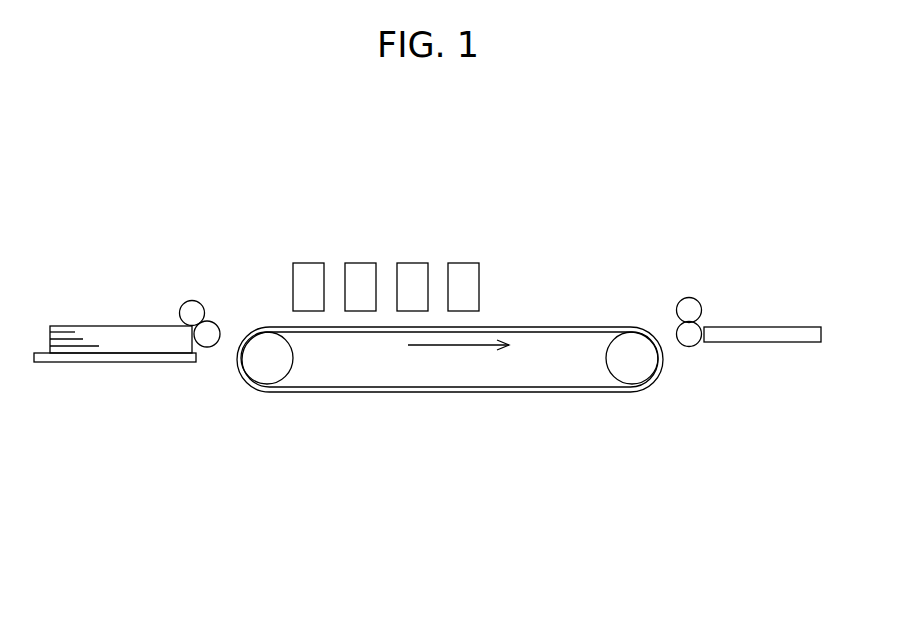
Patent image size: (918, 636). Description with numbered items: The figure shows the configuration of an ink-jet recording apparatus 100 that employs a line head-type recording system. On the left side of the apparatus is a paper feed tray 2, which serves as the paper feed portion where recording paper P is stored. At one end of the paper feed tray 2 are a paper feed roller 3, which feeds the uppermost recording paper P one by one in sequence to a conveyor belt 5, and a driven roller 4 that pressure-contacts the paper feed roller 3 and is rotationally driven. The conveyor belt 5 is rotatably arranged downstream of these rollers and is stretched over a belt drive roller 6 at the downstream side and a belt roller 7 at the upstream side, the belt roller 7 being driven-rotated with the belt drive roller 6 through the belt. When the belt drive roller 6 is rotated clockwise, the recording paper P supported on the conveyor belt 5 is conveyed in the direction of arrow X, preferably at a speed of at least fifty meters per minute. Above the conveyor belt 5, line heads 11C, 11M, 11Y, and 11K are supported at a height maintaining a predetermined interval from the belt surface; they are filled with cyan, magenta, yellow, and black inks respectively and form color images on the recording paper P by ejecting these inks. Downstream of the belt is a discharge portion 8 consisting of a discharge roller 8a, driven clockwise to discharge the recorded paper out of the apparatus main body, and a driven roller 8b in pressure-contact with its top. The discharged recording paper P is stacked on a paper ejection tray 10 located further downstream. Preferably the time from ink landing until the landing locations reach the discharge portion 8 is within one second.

The ink-jet recording apparatus 100 is at (242, 268).
The paper feed tray 2 is at (99, 362).
The recording paper P is at (117, 335).
The paper feed roller 3 is at (193, 311).
The driven roller 4 is at (207, 343).
The conveyor belt 5 is at (437, 392).
The paper conveying direction X is at (458, 357).
The belt roller 7 is at (272, 373).
The belt drive roller 6 is at (635, 373).
The line head 11C is at (312, 270).
The line head 11M is at (363, 270).
The line head 11Y is at (415, 270).
The line head 11K is at (468, 270).
The discharge portion 8 is at (662, 318).
The driven roller 8b is at (690, 308).
The discharge roller 8a is at (689, 345).
The paper ejection tray 10 is at (770, 335).